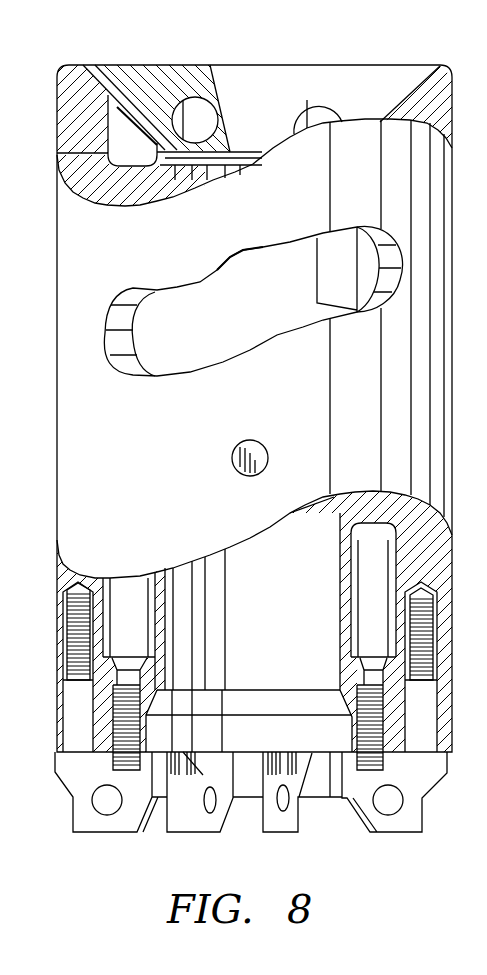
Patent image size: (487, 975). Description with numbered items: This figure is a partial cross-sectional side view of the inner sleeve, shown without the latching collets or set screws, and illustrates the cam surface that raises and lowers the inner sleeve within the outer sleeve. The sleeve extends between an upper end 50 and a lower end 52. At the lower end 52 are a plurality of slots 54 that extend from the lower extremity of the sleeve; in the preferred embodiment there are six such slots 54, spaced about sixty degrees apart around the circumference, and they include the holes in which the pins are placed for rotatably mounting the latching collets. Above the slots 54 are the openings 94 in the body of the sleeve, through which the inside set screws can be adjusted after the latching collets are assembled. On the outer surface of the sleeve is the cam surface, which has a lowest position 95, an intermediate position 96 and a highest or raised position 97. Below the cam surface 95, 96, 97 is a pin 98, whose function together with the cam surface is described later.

The upper end 50 is at (229, 467).
The lower end 52 is at (250, 820).
The slots 54 is at (203, 775).
The openings 94 is at (116, 627).
The lowest position 95 is at (174, 294).
The intermediate position 96 is at (256, 260).
The highest or raised position 97 is at (356, 305).
The pin 98 is at (243, 440).